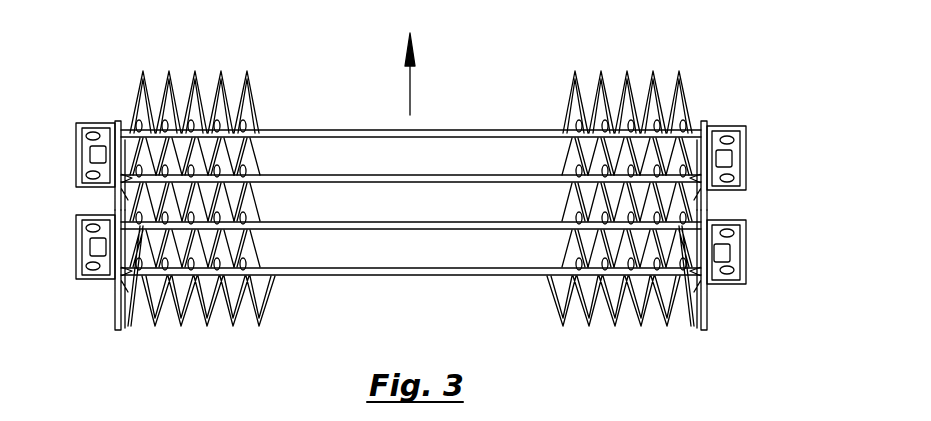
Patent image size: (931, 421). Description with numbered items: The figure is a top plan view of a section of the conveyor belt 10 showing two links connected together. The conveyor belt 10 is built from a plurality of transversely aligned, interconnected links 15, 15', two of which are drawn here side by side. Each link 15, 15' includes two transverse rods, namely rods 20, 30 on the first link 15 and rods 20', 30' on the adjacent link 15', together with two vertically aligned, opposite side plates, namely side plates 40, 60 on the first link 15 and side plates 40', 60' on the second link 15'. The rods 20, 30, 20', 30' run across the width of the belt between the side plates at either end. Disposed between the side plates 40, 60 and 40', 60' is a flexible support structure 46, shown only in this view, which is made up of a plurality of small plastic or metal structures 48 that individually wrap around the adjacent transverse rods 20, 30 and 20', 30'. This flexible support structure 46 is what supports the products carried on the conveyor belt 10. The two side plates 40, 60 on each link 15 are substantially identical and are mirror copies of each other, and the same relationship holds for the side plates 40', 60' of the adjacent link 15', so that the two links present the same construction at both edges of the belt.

The conveyor belt 10 is at (128, 52).
The link 15 is at (63, 145).
The link 15' is at (58, 247).
The transverse rod 20 is at (411, 118).
The transverse rod 30 is at (411, 165).
The transverse rod 20' is at (411, 211).
The transverse rod 30' is at (411, 258).
The side plate 40 is at (748, 171).
The side plate 40' is at (738, 270).
The flexible support structure 46 is at (270, 97).
The small plastic or metal structure 48 is at (574, 95).
The side plate 60 is at (78, 167).
The side plate 60' is at (77, 270).